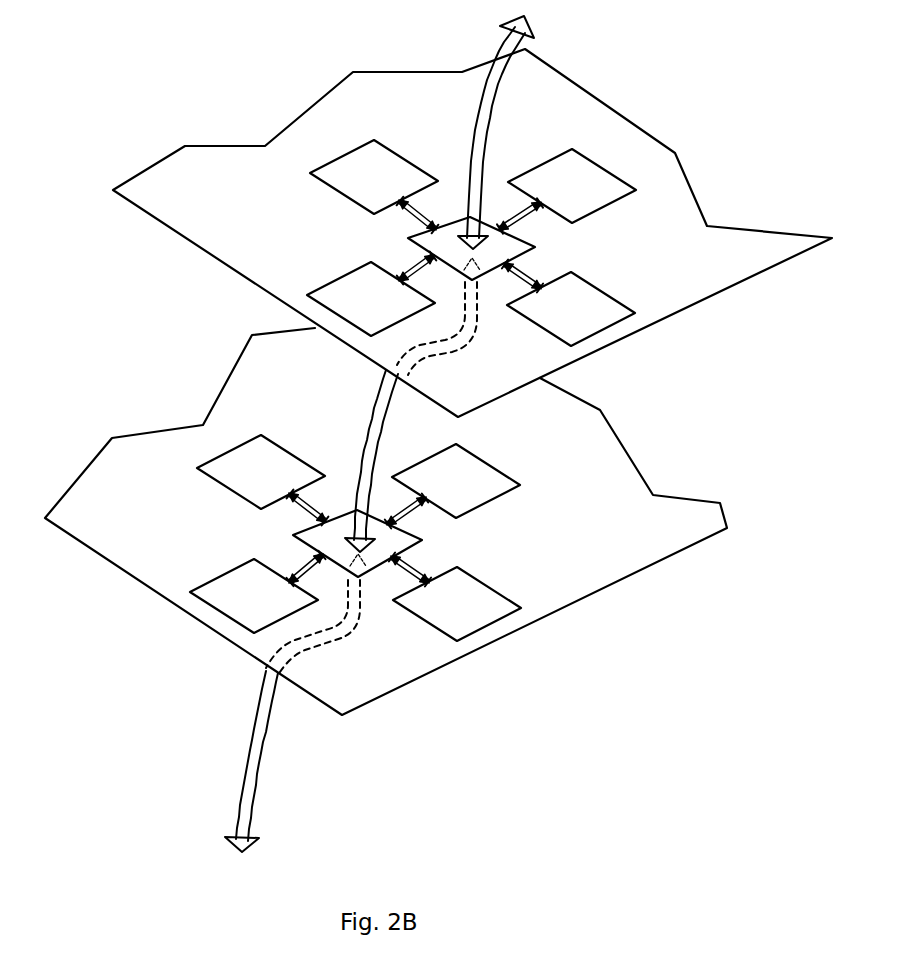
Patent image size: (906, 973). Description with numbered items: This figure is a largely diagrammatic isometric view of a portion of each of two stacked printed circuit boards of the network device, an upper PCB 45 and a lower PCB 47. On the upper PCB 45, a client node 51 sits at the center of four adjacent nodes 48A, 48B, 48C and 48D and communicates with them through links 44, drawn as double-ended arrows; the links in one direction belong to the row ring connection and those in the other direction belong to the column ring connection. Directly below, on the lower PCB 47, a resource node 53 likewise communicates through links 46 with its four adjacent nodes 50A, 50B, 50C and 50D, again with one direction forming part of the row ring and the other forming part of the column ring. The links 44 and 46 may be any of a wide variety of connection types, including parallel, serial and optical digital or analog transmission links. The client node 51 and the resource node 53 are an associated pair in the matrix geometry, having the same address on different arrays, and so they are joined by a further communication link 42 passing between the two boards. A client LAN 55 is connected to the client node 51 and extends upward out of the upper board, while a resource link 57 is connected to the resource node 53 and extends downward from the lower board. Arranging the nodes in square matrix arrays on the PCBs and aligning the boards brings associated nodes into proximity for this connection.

The communication link 42 is at (368, 417).
The links 44 is at (530, 272).
The PCB 45 is at (682, 217).
The links 46 is at (412, 567).
The PCB 47 is at (105, 503).
The adjacent node 48A is at (348, 167).
The adjacent node 48B is at (599, 180).
The adjacent node 48C is at (573, 320).
The adjacent node 48D is at (345, 300).
The adjacent node 50A is at (223, 467).
The adjacent node 50B is at (467, 462).
The adjacent node 50C is at (450, 612).
The adjacent node 50D is at (235, 575).
The client node 51 is at (450, 233).
The resource node 53 is at (352, 507).
The client LAN 55 is at (472, 128).
The resource link 57 is at (250, 730).